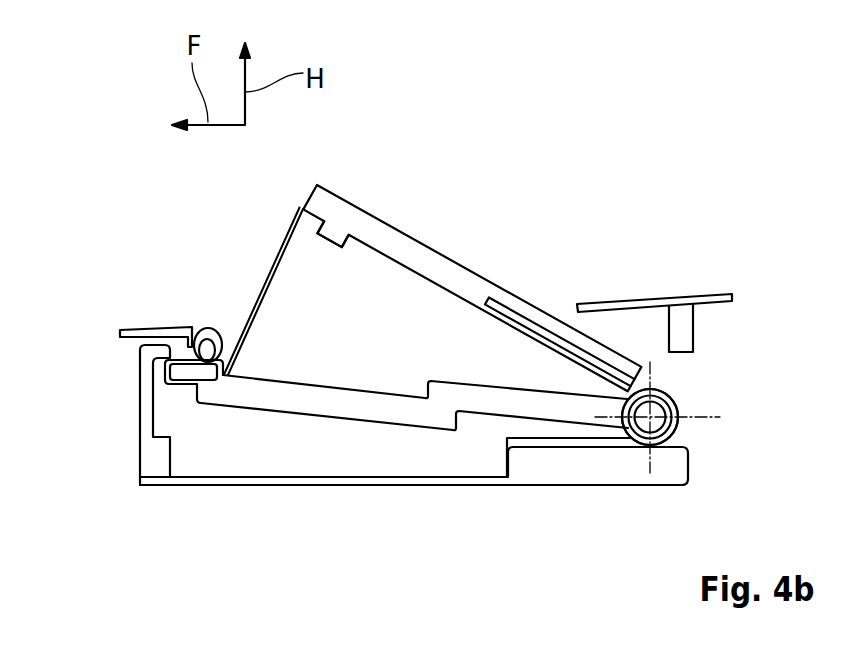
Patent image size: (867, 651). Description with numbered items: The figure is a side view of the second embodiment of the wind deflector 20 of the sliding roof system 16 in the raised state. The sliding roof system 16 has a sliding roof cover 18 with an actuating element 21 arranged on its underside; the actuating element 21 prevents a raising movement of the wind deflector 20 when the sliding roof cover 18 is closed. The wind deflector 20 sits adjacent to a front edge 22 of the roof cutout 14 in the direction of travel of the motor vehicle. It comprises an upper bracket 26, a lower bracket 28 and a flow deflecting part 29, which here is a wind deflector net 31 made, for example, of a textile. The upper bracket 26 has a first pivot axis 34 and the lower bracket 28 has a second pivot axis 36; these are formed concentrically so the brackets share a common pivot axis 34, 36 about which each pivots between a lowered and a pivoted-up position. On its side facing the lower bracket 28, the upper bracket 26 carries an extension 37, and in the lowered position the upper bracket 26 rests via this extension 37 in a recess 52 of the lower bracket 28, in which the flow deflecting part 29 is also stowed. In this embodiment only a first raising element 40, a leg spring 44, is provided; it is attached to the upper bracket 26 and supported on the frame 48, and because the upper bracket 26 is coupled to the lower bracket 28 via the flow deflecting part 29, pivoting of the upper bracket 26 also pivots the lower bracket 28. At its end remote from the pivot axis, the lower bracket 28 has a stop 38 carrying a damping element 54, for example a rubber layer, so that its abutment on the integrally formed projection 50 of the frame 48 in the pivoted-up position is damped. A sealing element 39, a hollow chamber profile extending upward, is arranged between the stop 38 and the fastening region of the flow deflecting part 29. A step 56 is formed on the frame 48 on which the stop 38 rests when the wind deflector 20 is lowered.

The roof cutout 14 is at (121, 236).
The sliding roof system 16 is at (658, 229).
The sliding roof cover 18 is at (604, 307).
The wind deflector 20 is at (762, 253).
The actuating element 21 is at (680, 318).
The front edge 22 is at (139, 336).
The upper bracket 26 is at (412, 252).
The lower bracket 28 is at (296, 406).
The flow deflecting part 29 is at (214, 277).
The wind deflector net 31 is at (287, 247).
The first pivot axis 34 is at (703, 417).
The second pivot axis 36 is at (650, 417).
The extension 37 is at (334, 235).
The stop 38 is at (193, 377).
The sealing element 39 is at (206, 330).
The first raising element 40 is at (716, 393).
The spring 44 is at (676, 406).
The frame 48 is at (413, 480).
The projection 50 is at (163, 348).
The recess 52 is at (365, 393).
The damping element 54 is at (165, 364).
The step 56 is at (160, 443).